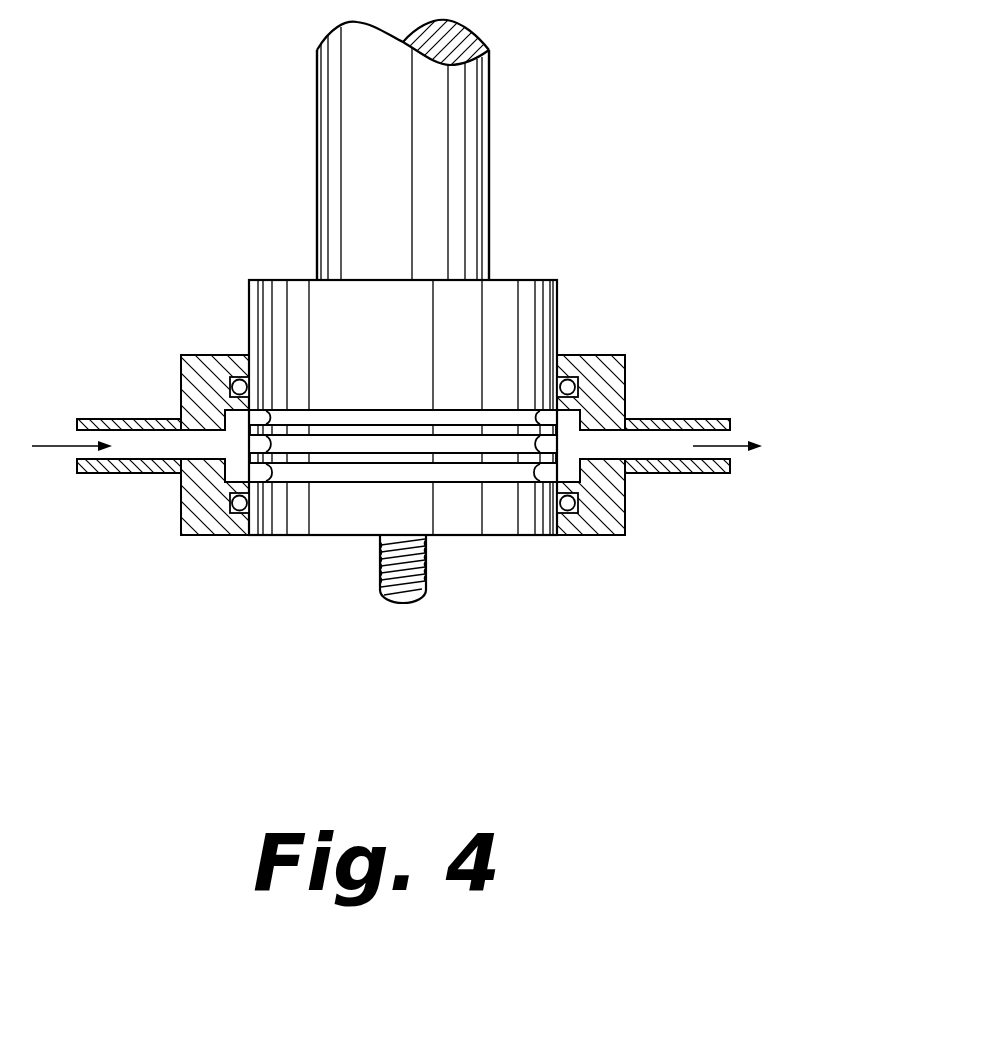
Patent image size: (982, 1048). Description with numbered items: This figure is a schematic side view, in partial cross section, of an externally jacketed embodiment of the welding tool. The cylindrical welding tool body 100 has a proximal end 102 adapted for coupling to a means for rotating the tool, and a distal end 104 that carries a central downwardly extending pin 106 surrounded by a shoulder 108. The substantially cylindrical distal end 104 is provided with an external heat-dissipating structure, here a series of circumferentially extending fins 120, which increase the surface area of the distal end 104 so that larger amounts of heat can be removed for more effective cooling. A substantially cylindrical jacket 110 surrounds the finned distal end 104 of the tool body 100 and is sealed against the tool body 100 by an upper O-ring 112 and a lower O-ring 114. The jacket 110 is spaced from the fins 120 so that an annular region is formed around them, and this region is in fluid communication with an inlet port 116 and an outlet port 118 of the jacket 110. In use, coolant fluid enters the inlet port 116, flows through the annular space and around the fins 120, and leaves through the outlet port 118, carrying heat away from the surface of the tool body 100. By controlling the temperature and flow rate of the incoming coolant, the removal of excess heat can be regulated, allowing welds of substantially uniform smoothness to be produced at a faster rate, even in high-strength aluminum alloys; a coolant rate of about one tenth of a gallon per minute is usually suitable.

The cylindrical welding tool body 100 is at (692, 133).
The proximal end 102 is at (508, 117).
The distal end 104 is at (702, 541).
The pin 106 is at (382, 592).
The shoulder 108 is at (522, 537).
The jacket 110 is at (625, 390).
The upper O-ring 112 is at (572, 385).
The lower O-ring 114 is at (568, 510).
The inlet port 116 is at (132, 440).
The outlet port 118 is at (672, 445).
The fins 120 is at (297, 398).